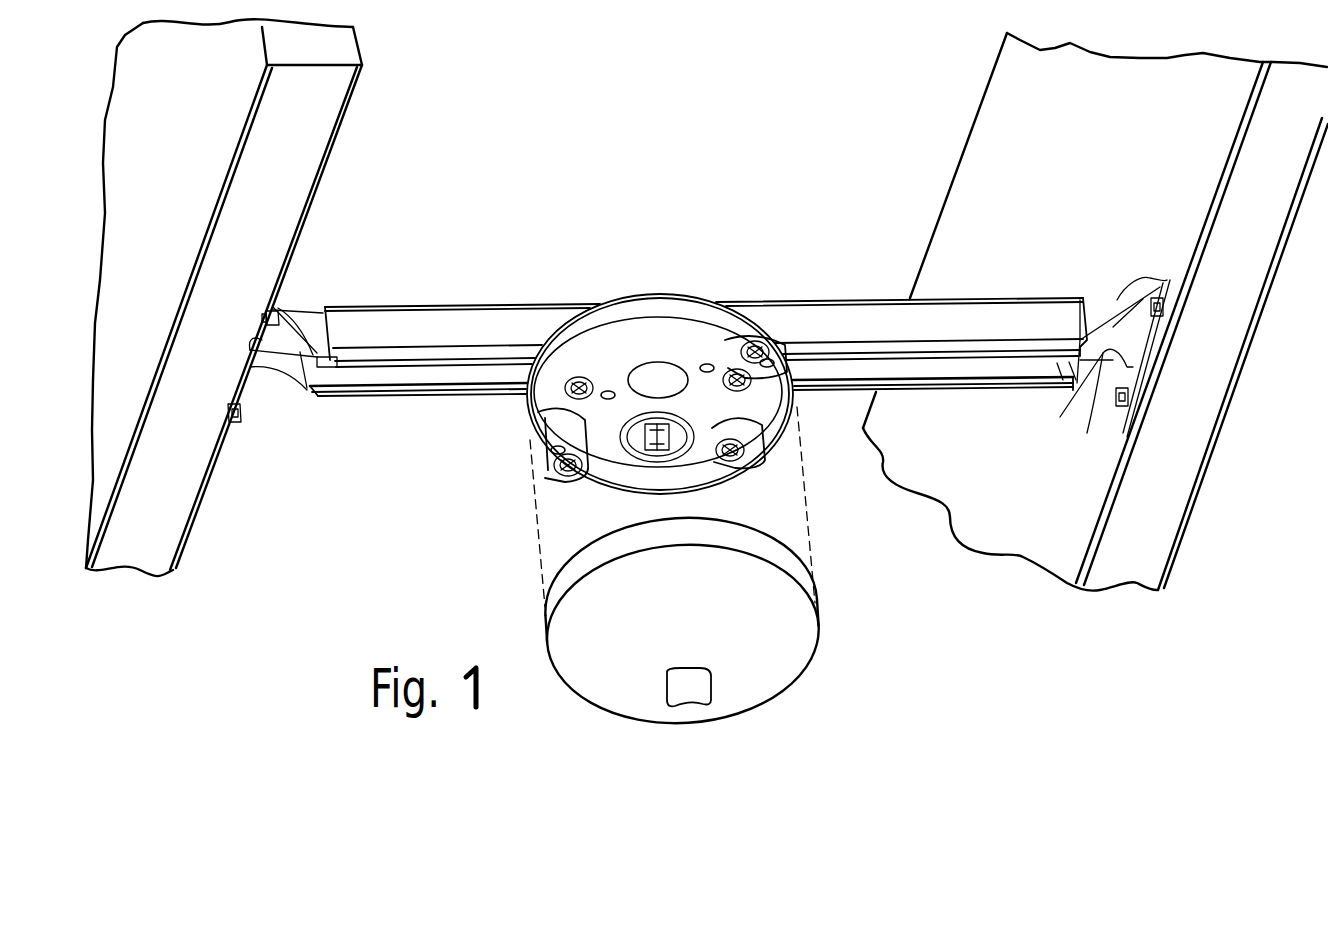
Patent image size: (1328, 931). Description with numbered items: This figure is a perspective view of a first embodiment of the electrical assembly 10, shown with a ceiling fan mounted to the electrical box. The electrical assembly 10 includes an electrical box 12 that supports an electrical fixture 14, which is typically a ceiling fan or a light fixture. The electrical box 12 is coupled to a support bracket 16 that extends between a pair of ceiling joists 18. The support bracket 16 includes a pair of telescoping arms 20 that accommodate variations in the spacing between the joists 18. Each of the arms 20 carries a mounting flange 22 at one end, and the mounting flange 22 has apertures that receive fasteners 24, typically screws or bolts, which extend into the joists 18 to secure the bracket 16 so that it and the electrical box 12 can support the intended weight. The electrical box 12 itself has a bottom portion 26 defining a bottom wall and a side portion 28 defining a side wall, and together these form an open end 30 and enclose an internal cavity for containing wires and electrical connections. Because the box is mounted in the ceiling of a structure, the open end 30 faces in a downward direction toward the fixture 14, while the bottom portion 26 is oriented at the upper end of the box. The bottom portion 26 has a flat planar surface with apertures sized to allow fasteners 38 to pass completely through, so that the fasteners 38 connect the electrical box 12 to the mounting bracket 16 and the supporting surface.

The electrical assembly 10 is at (699, 415).
The electrical box 12 is at (661, 412).
The electrical fixture 14 is at (716, 620).
The support bracket 16 is at (699, 360).
The ceiling joists 18 is at (707, 304).
The telescoping arms 20 is at (698, 356).
The mounting flange 22 is at (706, 366).
The fasteners 24 is at (695, 374).
The bottom portion 26 is at (658, 356).
The side portion 28 is at (660, 355).
The open end 30 is at (582, 475).
The fasteners 38 is at (615, 362).